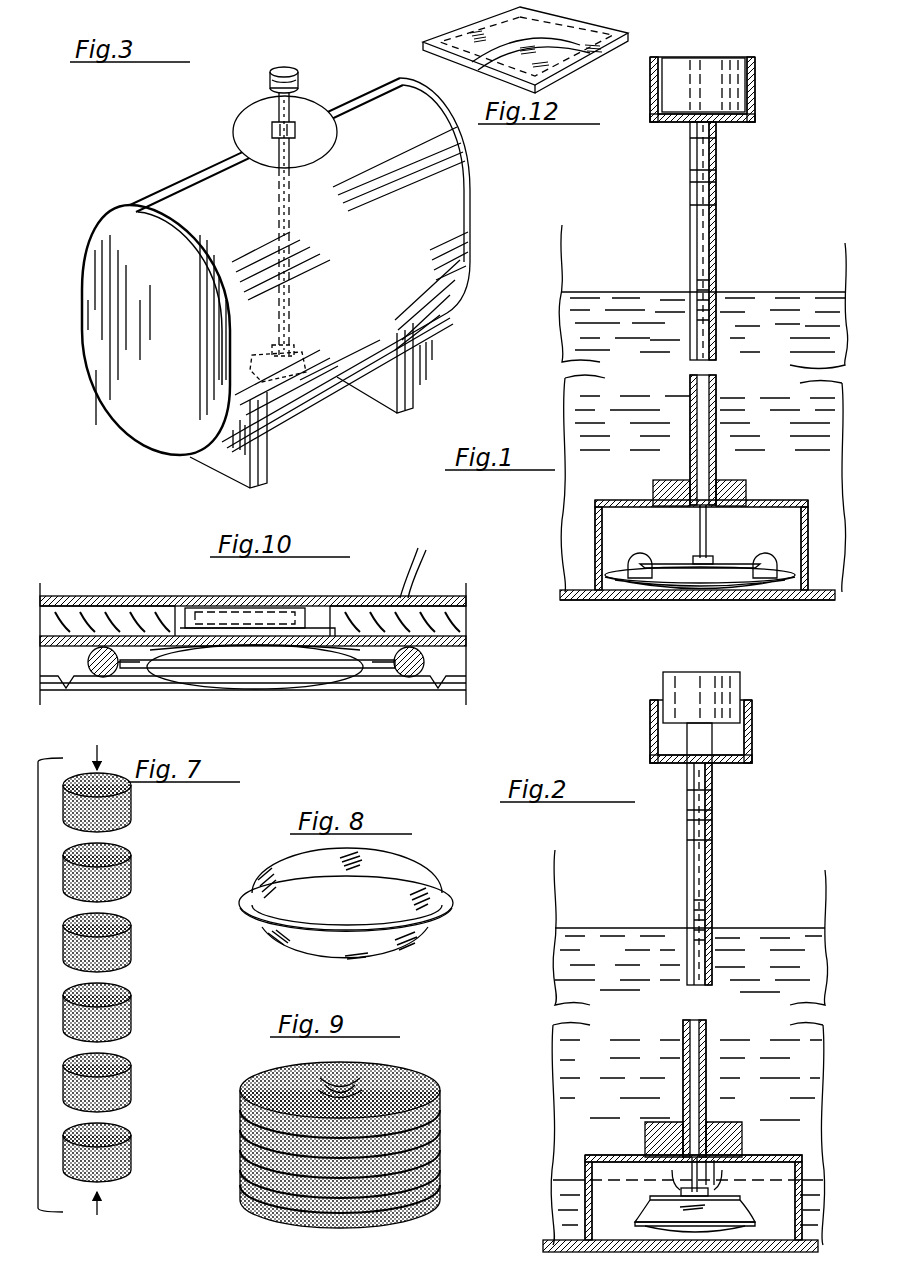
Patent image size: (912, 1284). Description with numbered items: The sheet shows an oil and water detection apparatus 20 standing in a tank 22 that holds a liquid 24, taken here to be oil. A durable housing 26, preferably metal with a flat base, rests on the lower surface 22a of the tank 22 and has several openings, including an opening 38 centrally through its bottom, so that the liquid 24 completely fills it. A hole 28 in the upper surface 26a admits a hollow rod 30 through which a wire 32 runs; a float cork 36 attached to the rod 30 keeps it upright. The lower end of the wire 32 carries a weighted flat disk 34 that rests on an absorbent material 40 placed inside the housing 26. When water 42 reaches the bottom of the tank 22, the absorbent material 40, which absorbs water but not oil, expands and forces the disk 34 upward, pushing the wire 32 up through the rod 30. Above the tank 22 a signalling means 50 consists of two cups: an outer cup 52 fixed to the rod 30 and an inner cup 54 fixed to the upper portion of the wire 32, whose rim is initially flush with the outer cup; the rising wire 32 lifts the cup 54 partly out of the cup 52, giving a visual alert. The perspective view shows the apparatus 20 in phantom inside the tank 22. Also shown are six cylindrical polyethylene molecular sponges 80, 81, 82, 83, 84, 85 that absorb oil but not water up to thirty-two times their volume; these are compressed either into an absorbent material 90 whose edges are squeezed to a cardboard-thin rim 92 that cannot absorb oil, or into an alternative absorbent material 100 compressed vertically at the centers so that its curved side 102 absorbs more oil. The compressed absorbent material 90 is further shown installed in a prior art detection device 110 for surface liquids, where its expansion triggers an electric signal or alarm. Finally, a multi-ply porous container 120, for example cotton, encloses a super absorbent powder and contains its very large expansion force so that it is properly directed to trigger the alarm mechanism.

In FIG. 3, the detection apparatus 20 is at (272, 225).
In FIG. 1, the detection apparatus 20 is at (770, 158).
In FIG. 2, the detection apparatus 20 is at (680, 992).
In FIG. 3, the tank 22 is at (152, 190).
In FIG. 1, the tank 22 is at (558, 325).
In FIG. 2, the tank 22 is at (545, 1018).
In FIG. 3, the lower surface 22a is at (385, 338).
In FIG. 1, the lower surface 22a is at (596, 600).
In FIG. 3, the liquid 24 is at (392, 226).
In FIG. 1, the liquid 24 is at (800, 350).
In FIG. 2, the liquid 24 is at (607, 1052).
In FIG. 3, the housing 26 is at (306, 362).
In FIG. 1, the housing 26 is at (798, 497).
In FIG. 2, the housing 26 is at (580, 1162).
In FIG. 1, the upper surface 26a is at (612, 497).
In FIG. 1, the hole 28 is at (732, 480).
In FIG. 2, the hole 28 is at (725, 1180).
In FIG. 3, the hollow rod 30 is at (293, 258).
In FIG. 1, the hollow rod 30 is at (717, 304).
In FIG. 2, the hollow rod 30 is at (713, 972).
In FIG. 3, the wire 32 is at (290, 212).
In FIG. 1, the wire 32 is at (712, 322).
In FIG. 2, the wire 32 is at (712, 930).
In FIG. 1, the flat disk 34 is at (668, 562).
In FIG. 2, the flat disk 34 is at (672, 1185).
In FIG. 3, the float cork 36 is at (292, 345).
In FIG. 1, the float cork 36 is at (690, 480).
In FIG. 2, the float cork 36 is at (730, 1122).
In FIG. 1, the opening 38 is at (700, 600).
In FIG. 2, the opening 38 is at (680, 1246).
In FIG. 1, the absorbent material 40 is at (630, 570).
In FIG. 2, the absorbent material 40 is at (642, 1228).
In FIG. 2, the water 42 is at (608, 972).
In FIG. 3, the signalling means 50 is at (285, 117).
In FIG. 1, the signalling means 50 is at (775, 70).
In FIG. 2, the signalling means 50 is at (640, 765).
In FIG. 1, the cup 52 is at (652, 57).
In FIG. 2, the cup 52 is at (752, 752).
In FIG. 1, the cup 54 is at (712, 60).
In FIG. 2, the cup 54 is at (745, 674).
In FIG. 7, the polyethylene molecular sponge 80 is at (135, 1172).
In FIG. 7, the polyethylene molecular sponge 81 is at (135, 1096).
In FIG. 7, the polyethylene molecular sponge 82 is at (135, 1028).
In FIG. 7, the polyethylene molecular sponge 83 is at (133, 960).
In FIG. 7, the polyethylene molecular sponge 84 is at (133, 892).
In FIG. 7, the polyethylene molecular sponge 85 is at (133, 822).
In FIG. 10, the absorbent material 90 is at (218, 688).
In FIG. 8, the absorbent material 90 is at (452, 930).
In FIG. 10, the rim 92 is at (140, 670).
In FIG. 8, the rim 92 is at (252, 882).
In FIG. 9, the absorbent material 100 is at (344, 1145).
In FIG. 9, the curved side 102 is at (238, 1192).
In FIG. 10, the prior art detection device 110 is at (205, 592).
In FIG. 12, the multi-ply porous container 120 is at (466, 27).